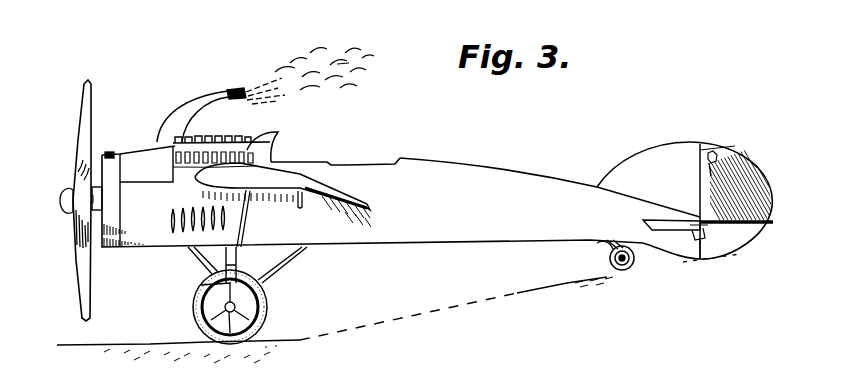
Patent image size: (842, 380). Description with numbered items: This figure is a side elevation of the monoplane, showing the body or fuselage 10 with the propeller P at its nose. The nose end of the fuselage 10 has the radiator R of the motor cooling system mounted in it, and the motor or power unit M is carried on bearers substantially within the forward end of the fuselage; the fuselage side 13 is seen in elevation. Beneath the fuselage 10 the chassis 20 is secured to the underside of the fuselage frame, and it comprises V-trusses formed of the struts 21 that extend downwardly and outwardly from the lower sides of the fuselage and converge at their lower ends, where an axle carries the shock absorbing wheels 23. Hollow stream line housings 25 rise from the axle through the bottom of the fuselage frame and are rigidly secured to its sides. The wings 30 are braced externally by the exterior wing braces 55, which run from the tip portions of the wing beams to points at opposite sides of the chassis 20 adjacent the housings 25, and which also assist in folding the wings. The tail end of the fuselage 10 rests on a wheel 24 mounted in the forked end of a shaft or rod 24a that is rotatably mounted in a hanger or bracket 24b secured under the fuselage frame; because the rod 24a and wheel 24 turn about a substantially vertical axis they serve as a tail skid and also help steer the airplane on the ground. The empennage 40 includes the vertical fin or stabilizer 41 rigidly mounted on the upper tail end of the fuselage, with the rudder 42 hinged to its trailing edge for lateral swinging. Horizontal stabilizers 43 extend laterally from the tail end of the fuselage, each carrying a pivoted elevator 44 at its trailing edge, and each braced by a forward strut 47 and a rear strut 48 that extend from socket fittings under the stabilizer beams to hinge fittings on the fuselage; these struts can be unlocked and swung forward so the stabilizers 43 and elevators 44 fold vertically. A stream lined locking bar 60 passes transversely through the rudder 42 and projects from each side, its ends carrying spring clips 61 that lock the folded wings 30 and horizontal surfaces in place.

The fuselage 10 is at (478, 177).
The fuselage body / engine cowling 13 is at (297, 189).
The chassis 20 is at (246, 265).
The struts 21 is at (190, 261).
The wheels 23 is at (268, 306).
The stream line housings 25 is at (227, 260).
The wings 30 is at (293, 178).
The exterior wing braces 55 is at (248, 218).
The empennage 40 is at (738, 185).
The vertical fin or stabilizer 41 is at (655, 150).
The rudder 42 is at (760, 175).
The horizontal stabilizers 43 is at (663, 218).
The elevator 44 is at (742, 240).
The strut 47 is at (643, 227).
The strut 48 is at (687, 230).
The locking bar 60 is at (717, 157).
The spring clips 61 is at (713, 153).
The wheel 24 is at (626, 271).
The shaft or rod 24a is at (613, 248).
The hanger or bracket 24b is at (634, 248).
The motor or power unit M is at (130, 153).
The radiator R is at (104, 152).
The propeller P is at (88, 290).